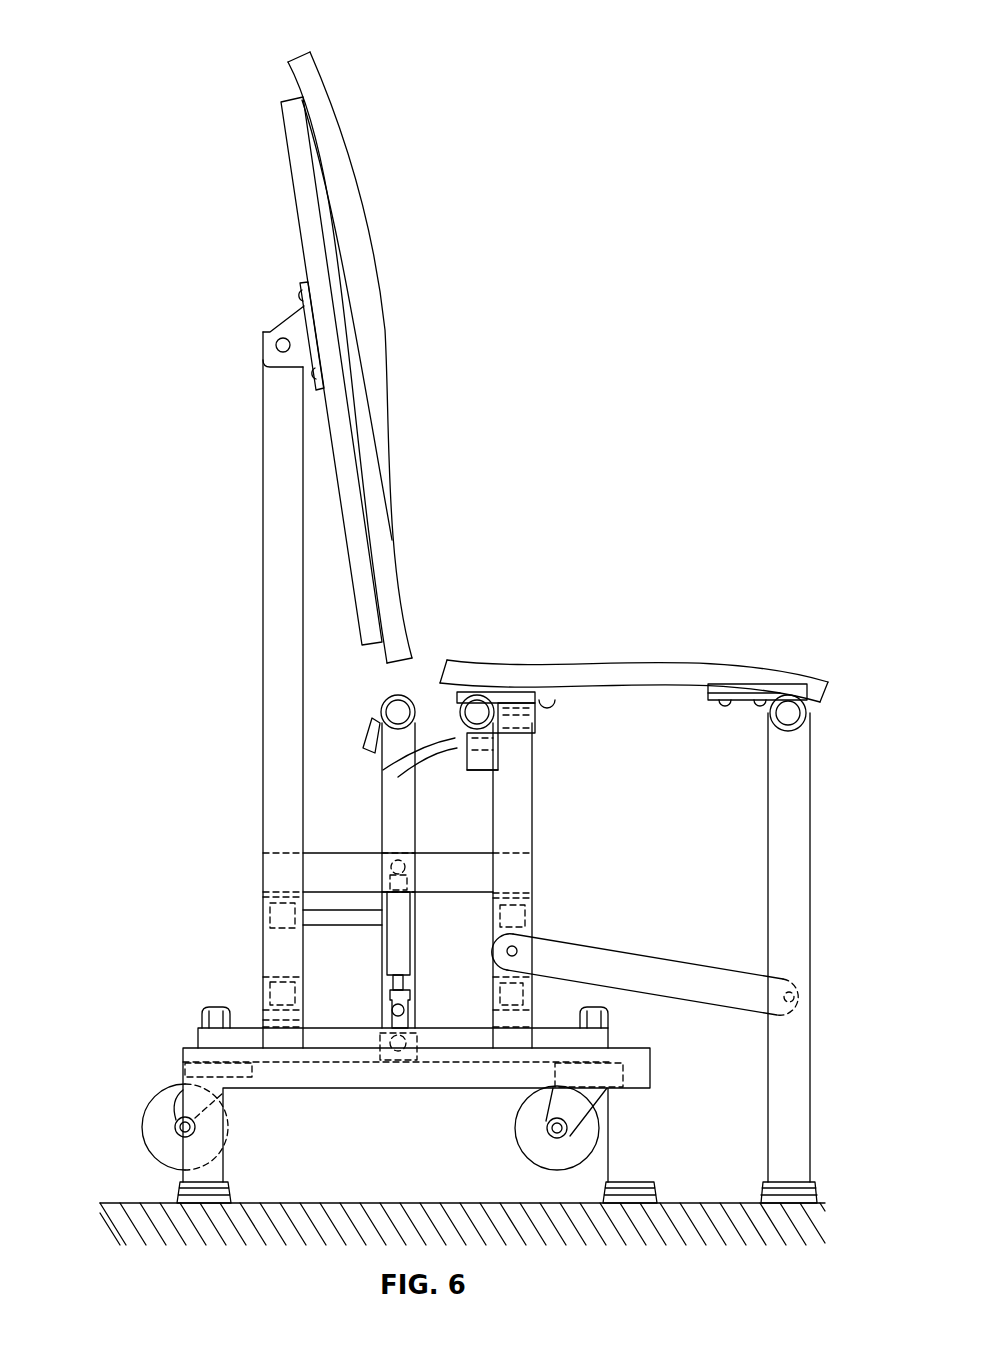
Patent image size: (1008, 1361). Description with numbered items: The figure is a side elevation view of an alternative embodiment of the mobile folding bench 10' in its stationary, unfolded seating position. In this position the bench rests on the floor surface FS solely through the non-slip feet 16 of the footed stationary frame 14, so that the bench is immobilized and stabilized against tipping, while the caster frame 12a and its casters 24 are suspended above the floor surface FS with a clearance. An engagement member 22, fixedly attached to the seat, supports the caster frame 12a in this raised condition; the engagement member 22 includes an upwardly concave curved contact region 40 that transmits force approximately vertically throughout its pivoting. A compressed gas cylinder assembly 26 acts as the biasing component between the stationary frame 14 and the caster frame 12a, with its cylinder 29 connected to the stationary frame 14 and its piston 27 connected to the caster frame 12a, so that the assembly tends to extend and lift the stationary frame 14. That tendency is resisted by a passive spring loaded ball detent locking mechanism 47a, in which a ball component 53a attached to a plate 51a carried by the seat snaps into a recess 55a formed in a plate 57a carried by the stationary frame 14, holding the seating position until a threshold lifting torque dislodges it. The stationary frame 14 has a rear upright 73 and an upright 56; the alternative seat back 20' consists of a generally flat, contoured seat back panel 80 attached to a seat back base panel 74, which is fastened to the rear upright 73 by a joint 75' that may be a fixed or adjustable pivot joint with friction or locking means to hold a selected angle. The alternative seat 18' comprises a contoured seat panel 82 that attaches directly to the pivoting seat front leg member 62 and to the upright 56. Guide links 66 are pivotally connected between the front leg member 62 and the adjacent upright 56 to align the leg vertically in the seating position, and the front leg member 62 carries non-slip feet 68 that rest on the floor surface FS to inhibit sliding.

The bench 10' is at (469, 624).
The seat back 20' is at (317, 333).
The seat back panel 80 is at (325, 78).
The seat back base panel 74 is at (305, 190).
The joint 75' is at (244, 346).
The rear upright 73 is at (263, 600).
The contact region 40 is at (427, 722).
The plate 51a is at (450, 740).
The engagement member 22 is at (440, 763).
The cylinder assembly 26 is at (412, 938).
The cylinder 29 is at (400, 947).
The piston 27 is at (392, 983).
The upright 56 is at (532, 840).
The seat 18' is at (634, 708).
The seat panel 82 is at (633, 660).
The detent locking mechanism 47a is at (505, 715).
The ball component 53a is at (495, 746).
The recess 55a is at (482, 751).
The plate 57a is at (483, 772).
The seat front leg member 62 is at (812, 886).
The non-slip feet 68 is at (818, 1190).
The guide links 66 is at (665, 967).
The stationary frame 14 is at (650, 1118).
The caster frame 12a is at (542, 1028).
The non-slip feet 16 is at (228, 1186).
The casters 24 is at (142, 1130).
The floor surface FS is at (118, 1203).